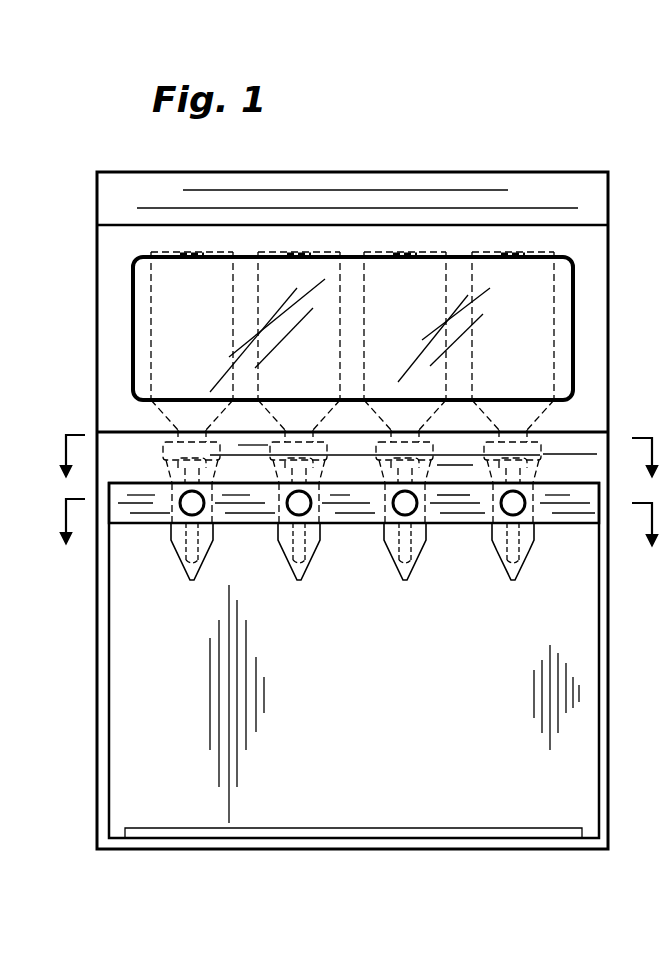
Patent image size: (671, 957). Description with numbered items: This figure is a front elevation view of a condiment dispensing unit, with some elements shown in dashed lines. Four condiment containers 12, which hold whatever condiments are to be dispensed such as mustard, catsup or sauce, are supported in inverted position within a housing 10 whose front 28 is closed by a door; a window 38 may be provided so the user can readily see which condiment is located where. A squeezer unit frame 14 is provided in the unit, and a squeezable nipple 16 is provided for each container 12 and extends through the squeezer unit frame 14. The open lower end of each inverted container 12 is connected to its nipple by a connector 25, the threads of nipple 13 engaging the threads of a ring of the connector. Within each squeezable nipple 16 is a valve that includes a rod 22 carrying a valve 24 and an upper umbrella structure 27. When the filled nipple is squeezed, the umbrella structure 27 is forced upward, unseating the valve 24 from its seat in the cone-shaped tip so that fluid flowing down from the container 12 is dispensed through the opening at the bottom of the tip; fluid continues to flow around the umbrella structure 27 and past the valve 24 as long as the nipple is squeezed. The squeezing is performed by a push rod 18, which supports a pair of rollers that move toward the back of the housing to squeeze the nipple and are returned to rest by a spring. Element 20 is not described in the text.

The housing 10 is at (391, 146).
The condiment container 12 is at (160, 321).
The nipple 13 is at (205, 545).
The squeezer unit frame 14 is at (582, 532).
The nipple 16 is at (178, 542).
The push rod 18 is at (537, 537).
The nozzle tip 20 is at (536, 596).
The rod 22 is at (483, 558).
The valve 24 is at (487, 578).
The connector 25 is at (512, 445).
The umbrella structure 27 is at (525, 465).
The front 28 is at (592, 312).
The window 38 is at (562, 272).